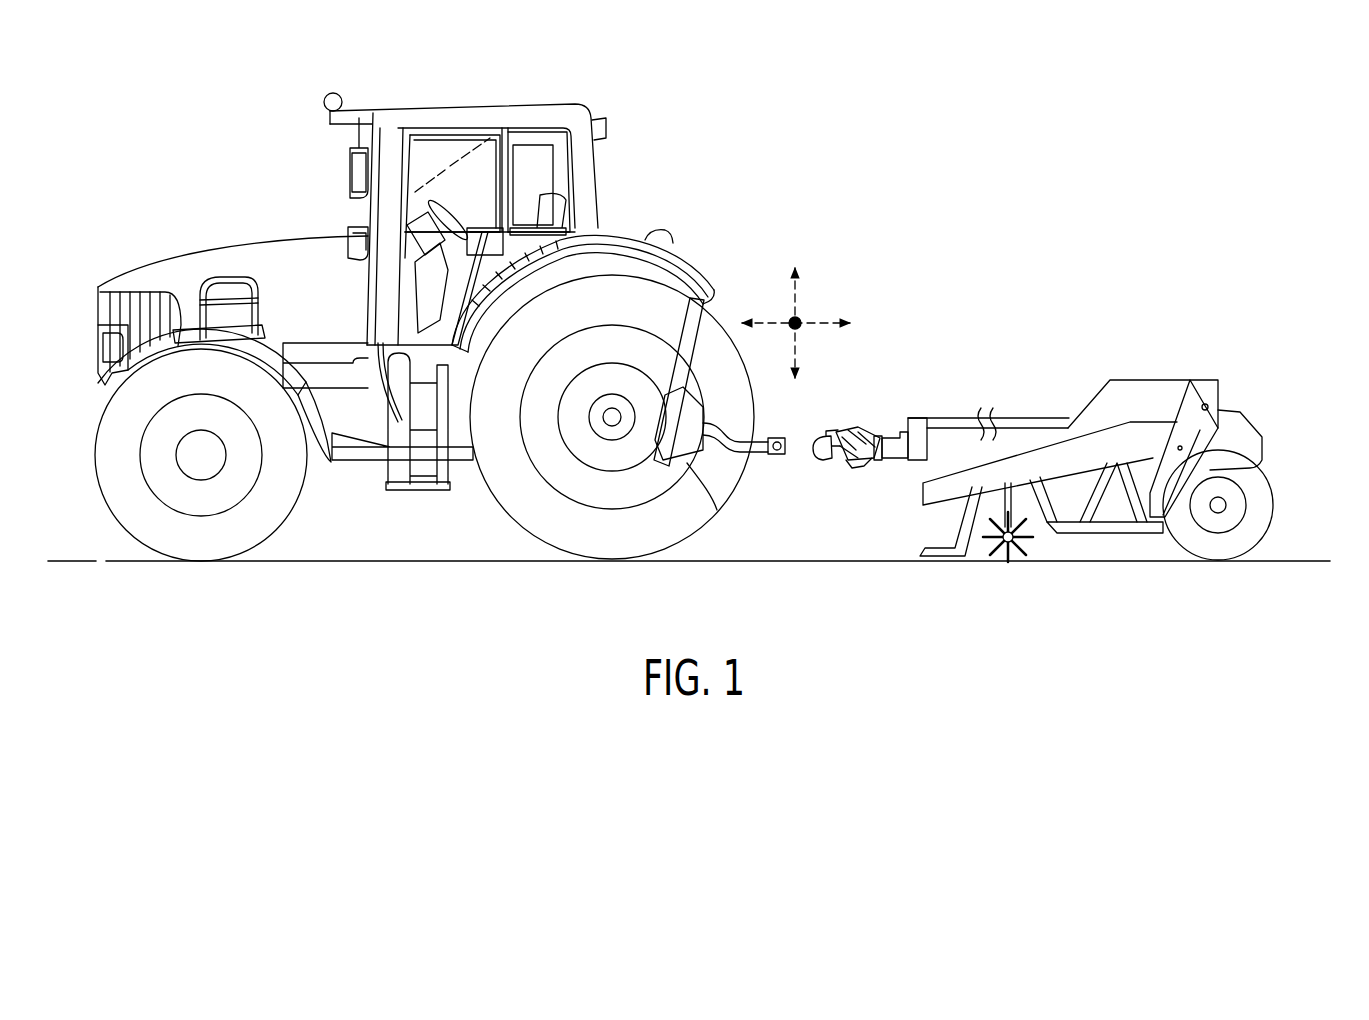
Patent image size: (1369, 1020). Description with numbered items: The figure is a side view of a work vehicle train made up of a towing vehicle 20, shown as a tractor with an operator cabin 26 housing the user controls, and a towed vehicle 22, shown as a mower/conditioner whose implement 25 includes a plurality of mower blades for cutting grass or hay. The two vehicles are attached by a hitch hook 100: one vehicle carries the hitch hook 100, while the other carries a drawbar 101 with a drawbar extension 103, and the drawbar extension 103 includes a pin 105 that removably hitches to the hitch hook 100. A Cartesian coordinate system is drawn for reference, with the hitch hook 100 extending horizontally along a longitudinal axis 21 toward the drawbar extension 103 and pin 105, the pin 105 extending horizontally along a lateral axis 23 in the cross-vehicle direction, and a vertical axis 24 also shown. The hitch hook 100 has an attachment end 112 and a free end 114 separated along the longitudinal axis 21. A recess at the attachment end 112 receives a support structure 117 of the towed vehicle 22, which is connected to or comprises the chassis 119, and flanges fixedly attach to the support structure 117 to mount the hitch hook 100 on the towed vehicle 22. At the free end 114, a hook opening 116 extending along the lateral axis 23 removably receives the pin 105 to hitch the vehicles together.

The towing vehicle 20 is at (237, 186).
The longitudinal axis 21 is at (820, 322).
The towed vehicle 22 is at (1063, 385).
The lateral axis 23 is at (798, 318).
The vertical axis 24 is at (792, 300).
The implement 25 is at (1030, 552).
The operator cabin 26 is at (460, 190).
The hitch hook 100 is at (863, 413).
The drawbar 101 is at (760, 468).
The drawbar extension 103 is at (778, 437).
The pin 105 is at (779, 454).
The attachment end 112 is at (915, 452).
The free end 114 is at (822, 461).
The hook opening 116 is at (832, 465).
The support structure 117 is at (935, 425).
The chassis 119 is at (1010, 425).